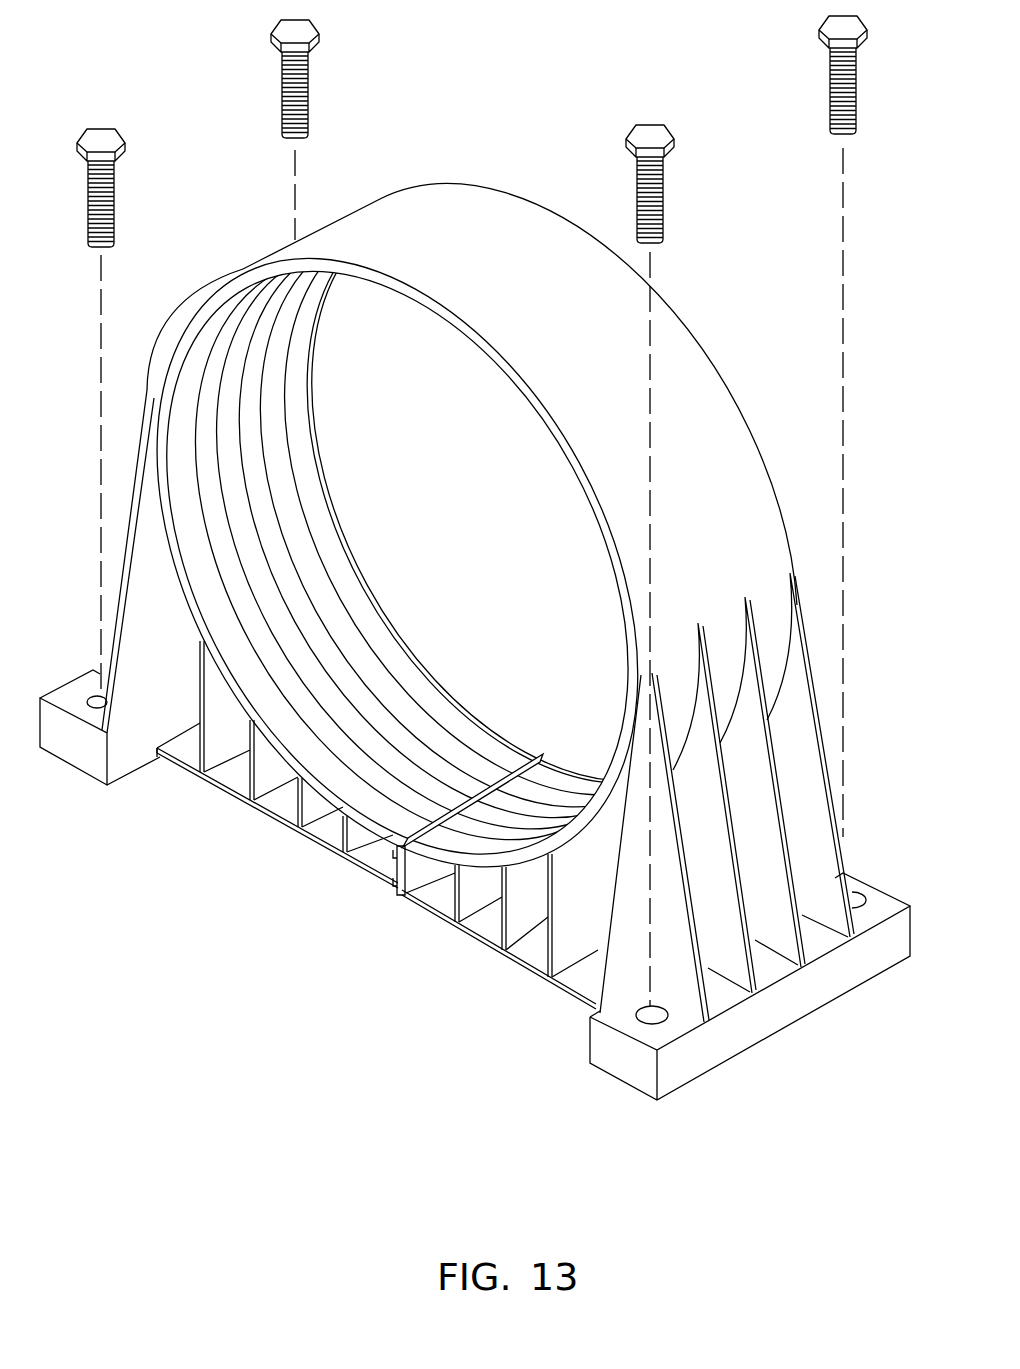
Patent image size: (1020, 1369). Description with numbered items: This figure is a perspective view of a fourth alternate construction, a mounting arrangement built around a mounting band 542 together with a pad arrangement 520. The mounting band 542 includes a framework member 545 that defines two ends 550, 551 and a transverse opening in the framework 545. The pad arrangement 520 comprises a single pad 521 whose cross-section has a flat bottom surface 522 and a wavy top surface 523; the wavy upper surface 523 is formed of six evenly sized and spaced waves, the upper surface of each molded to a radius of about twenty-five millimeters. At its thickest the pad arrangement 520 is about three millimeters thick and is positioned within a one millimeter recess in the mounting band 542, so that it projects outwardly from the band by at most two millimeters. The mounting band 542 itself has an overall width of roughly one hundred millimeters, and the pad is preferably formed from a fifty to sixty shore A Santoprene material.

The pad arrangement 520 is at (432, 519).
The pad 521 is at (292, 390).
The flat bottom surface 522 is at (538, 760).
The wavy top surface 523 is at (470, 728).
The mounting band 542 is at (688, 360).
The framework member 545 is at (203, 775).
The end 550 is at (400, 892).
The end 551 is at (407, 896).